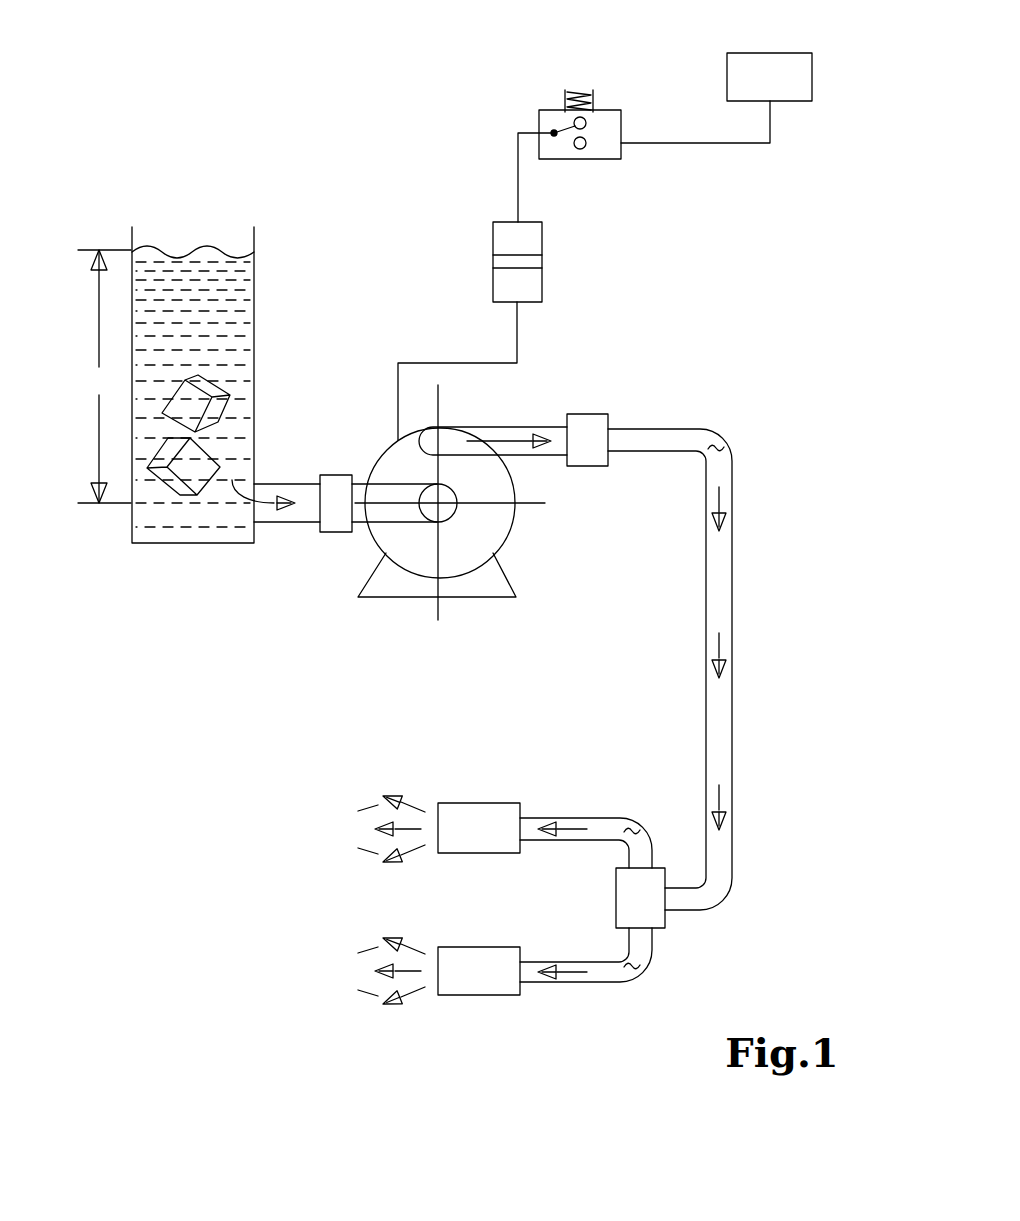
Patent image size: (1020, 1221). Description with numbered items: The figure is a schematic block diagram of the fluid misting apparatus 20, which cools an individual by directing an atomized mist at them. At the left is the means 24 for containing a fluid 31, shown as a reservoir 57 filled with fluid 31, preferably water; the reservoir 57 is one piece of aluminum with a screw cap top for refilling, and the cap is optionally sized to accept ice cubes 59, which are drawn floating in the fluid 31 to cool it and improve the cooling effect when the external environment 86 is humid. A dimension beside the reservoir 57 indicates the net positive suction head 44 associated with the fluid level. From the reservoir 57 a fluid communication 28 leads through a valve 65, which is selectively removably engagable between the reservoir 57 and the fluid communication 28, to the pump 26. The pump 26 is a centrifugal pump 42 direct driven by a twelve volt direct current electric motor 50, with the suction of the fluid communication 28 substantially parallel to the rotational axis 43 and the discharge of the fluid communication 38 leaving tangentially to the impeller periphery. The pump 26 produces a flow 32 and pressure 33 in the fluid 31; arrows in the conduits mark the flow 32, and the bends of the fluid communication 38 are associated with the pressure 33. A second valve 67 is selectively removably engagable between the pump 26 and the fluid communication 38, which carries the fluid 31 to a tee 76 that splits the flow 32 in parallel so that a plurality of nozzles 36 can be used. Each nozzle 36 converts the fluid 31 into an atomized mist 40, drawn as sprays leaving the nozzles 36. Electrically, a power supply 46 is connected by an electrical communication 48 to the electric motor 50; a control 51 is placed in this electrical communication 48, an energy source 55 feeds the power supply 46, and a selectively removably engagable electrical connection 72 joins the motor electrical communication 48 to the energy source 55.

The fluid misting apparatus 20 is at (307, 110).
The means for containing a fluid 24 is at (226, 544).
The pump 26 is at (512, 538).
The fluid communication between pump and means for containing a fluid 28 is at (293, 562).
The fluid 31 is at (160, 245).
The flow of fluid 32 is at (298, 495).
The pressure of fluid 33 is at (725, 447).
The nozzle 36 is at (479, 899).
The fluid communication between nozzle and pump 38 is at (527, 427).
The atomized mist of fluid 40 is at (332, 826).
The centrifugal type pump 42 is at (465, 541).
The centrifugal type pump rotational axis 43 is at (453, 496).
The net positive suction head (NPSH) 44 is at (104, 376).
The power supply 46 is at (769, 77).
The electrical communication between power supply and electric motor 48 is at (482, 178).
The electric motor 50 is at (372, 548).
The control 51 is at (553, 110).
The energy source 55 is at (727, 69).
The reservoir 57 is at (255, 298).
The ice cubes 59 is at (215, 467).
The valve between reservoir and pump fluid communication 65 is at (338, 475).
The valve between pump and nozzle fluid communication 67 is at (587, 414).
The electrical connection 72 is at (543, 287).
The tee 76 is at (616, 900).
The external environment 86 is at (765, 278).